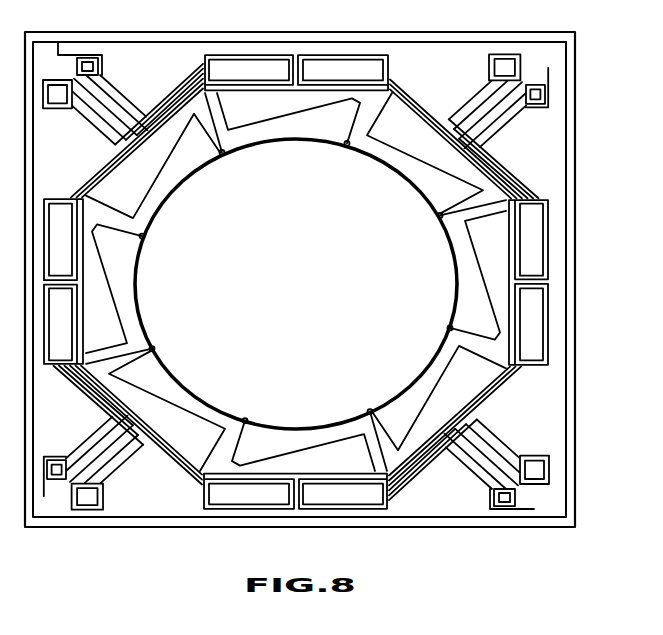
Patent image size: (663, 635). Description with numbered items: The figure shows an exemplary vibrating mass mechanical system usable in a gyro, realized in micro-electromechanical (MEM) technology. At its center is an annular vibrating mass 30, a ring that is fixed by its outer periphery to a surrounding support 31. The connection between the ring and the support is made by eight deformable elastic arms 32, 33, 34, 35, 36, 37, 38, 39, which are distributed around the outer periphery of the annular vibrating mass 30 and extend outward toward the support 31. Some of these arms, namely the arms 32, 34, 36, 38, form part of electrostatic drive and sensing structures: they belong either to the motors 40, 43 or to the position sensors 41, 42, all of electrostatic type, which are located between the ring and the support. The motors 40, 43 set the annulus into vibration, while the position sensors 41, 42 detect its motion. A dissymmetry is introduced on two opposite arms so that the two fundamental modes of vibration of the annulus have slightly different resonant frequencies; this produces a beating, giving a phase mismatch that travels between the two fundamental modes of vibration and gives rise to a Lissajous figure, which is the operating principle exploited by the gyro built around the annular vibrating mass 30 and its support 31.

The annular vibrating mass 30 is at (393, 138).
The support 31 is at (558, 166).
The deformable elastic arm 32 is at (157, 186).
The deformable elastic arm 33 is at (122, 296).
The deformable elastic arm 34 is at (177, 407).
The deformable elastic arm 35 is at (317, 445).
The deformable elastic arm 36 is at (430, 390).
The deformable elastic arm 37 is at (460, 283).
The deformable elastic arm 38 is at (430, 112).
The deformable elastic arm 39 is at (283, 120).
The motor 40 is at (178, 450).
The position sensor 41 is at (490, 397).
The position sensor 42 is at (490, 167).
The motor 43 is at (167, 122).